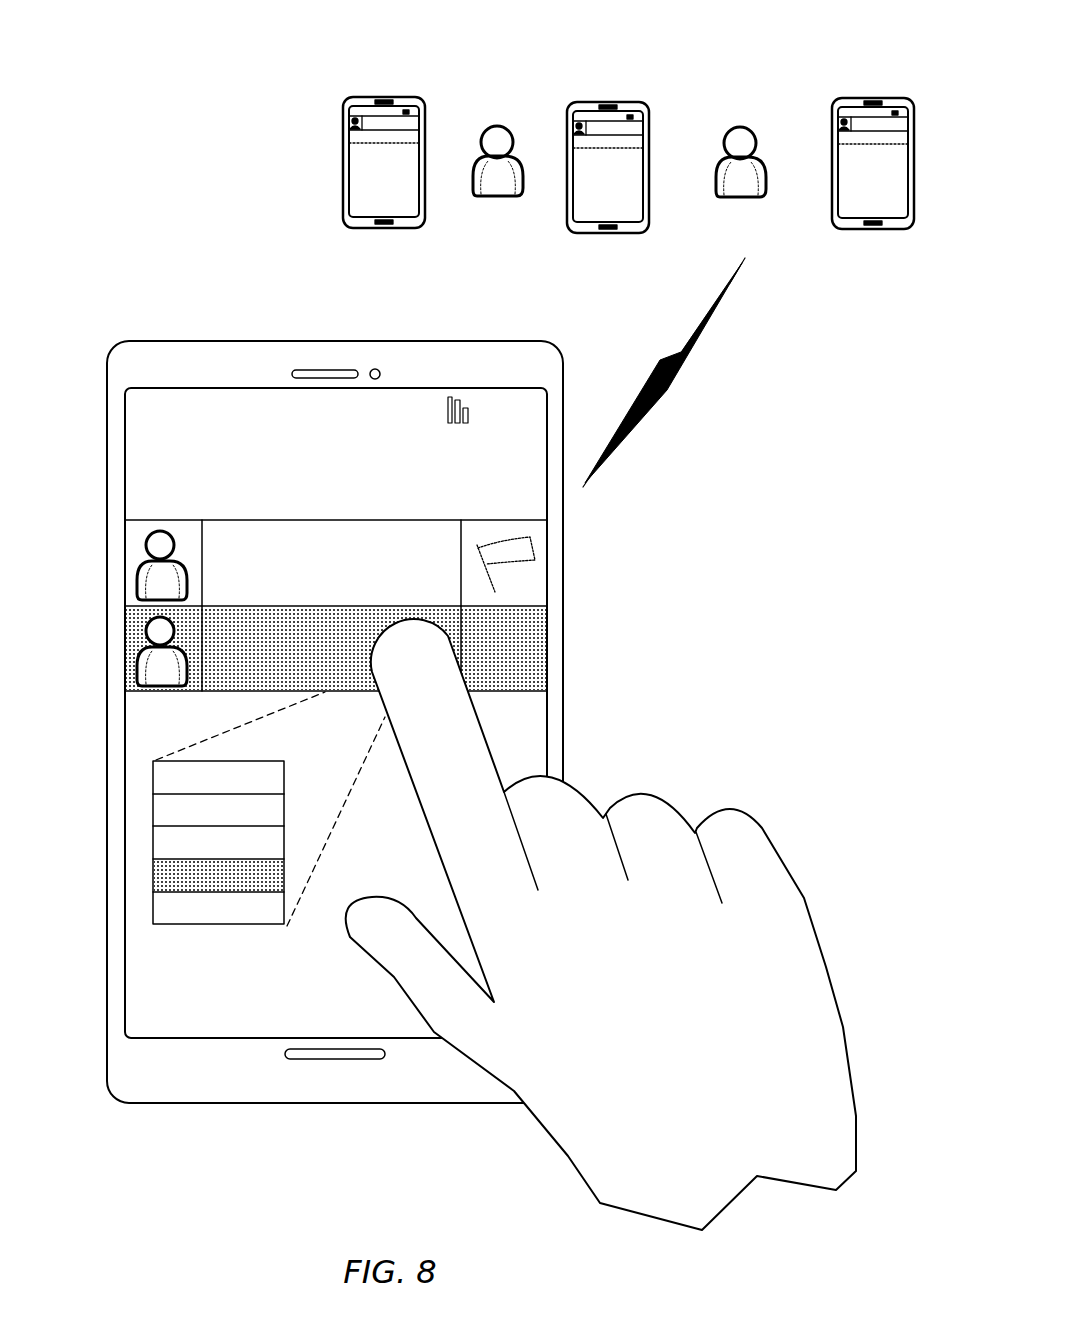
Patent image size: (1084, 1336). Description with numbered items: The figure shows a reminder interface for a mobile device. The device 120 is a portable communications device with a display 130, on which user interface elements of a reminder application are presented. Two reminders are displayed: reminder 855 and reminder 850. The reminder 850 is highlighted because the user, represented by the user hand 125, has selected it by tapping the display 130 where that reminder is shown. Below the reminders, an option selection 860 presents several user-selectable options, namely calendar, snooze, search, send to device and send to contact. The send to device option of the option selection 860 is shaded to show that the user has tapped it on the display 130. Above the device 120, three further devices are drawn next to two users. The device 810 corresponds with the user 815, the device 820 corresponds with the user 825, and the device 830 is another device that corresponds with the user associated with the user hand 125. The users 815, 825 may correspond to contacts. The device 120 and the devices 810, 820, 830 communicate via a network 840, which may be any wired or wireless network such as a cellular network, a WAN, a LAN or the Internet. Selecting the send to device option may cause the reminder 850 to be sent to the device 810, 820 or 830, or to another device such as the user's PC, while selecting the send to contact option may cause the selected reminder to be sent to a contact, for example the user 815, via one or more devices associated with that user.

The device 120 is at (247, 1103).
The user hand 125 is at (754, 817).
The display 130 is at (336, 713).
The device 810 is at (388, 97).
The user 815 is at (500, 126).
The device 820 is at (622, 102).
The user 825 is at (740, 127).
The device 830 is at (877, 98).
The network 840 is at (688, 347).
The reminder 850 is at (450, 636).
The reminder 855 is at (412, 565).
The option selection 860 is at (207, 925).